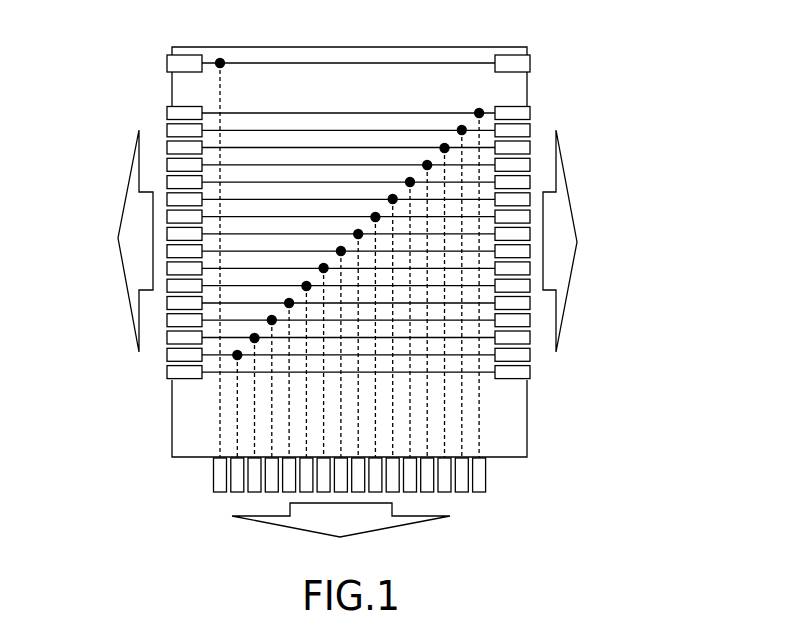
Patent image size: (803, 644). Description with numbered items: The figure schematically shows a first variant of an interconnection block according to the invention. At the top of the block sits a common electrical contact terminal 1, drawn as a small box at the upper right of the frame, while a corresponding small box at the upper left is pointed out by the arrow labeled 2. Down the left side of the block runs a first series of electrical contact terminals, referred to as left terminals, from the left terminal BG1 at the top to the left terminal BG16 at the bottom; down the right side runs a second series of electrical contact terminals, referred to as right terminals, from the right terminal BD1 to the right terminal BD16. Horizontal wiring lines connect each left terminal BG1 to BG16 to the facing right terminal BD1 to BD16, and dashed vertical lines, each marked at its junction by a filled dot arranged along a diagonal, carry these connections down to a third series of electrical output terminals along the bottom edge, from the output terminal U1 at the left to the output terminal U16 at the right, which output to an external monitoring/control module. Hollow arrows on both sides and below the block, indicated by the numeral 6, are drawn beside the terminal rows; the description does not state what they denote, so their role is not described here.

The common electrical contact terminal 1 is at (523, 64).
The gate-side top register cell 2 is at (158, 88).
The shift direction arrows 6 is at (568, 320).
The left terminal BG1 is at (170, 117).
The left terminal BG16 is at (172, 370).
The right terminal BD1 is at (525, 113).
The right terminal BD16 is at (530, 373).
The electrical output terminal U1 is at (220, 482).
The electrical output terminal U16 is at (478, 482).